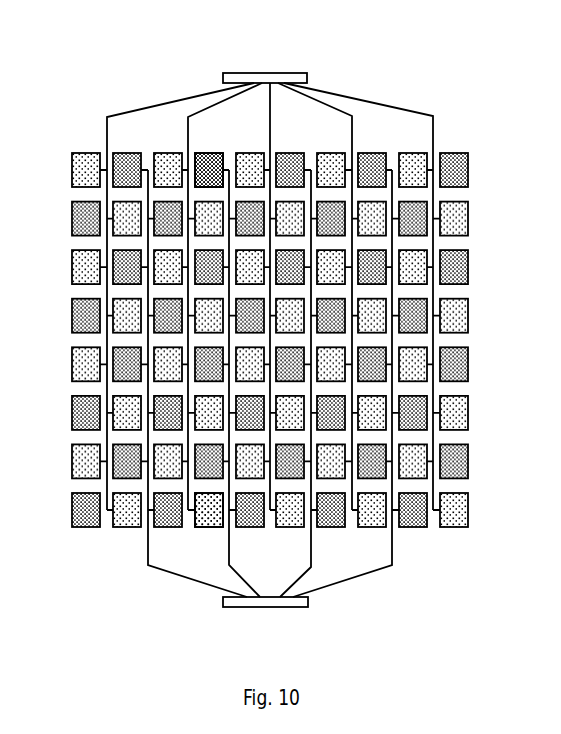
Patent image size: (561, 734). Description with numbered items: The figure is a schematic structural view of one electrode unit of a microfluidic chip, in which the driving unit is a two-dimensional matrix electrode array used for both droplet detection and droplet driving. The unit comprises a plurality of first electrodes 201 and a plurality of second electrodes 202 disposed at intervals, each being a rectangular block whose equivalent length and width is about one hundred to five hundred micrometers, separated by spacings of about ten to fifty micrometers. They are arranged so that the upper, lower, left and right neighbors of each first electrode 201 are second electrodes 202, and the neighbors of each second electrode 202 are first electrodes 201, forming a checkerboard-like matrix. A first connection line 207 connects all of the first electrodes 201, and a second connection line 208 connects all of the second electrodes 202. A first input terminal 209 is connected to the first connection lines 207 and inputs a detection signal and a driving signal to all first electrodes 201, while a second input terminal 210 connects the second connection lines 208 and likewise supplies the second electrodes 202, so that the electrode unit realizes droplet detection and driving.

The first electrode 201 is at (183, 552).
The second electrode 202 is at (182, 115).
The first connection line 207 is at (358, 260).
The second connection line 208 is at (350, 411).
The first input terminal 209 is at (268, 47).
The second input terminal 210 is at (267, 624).